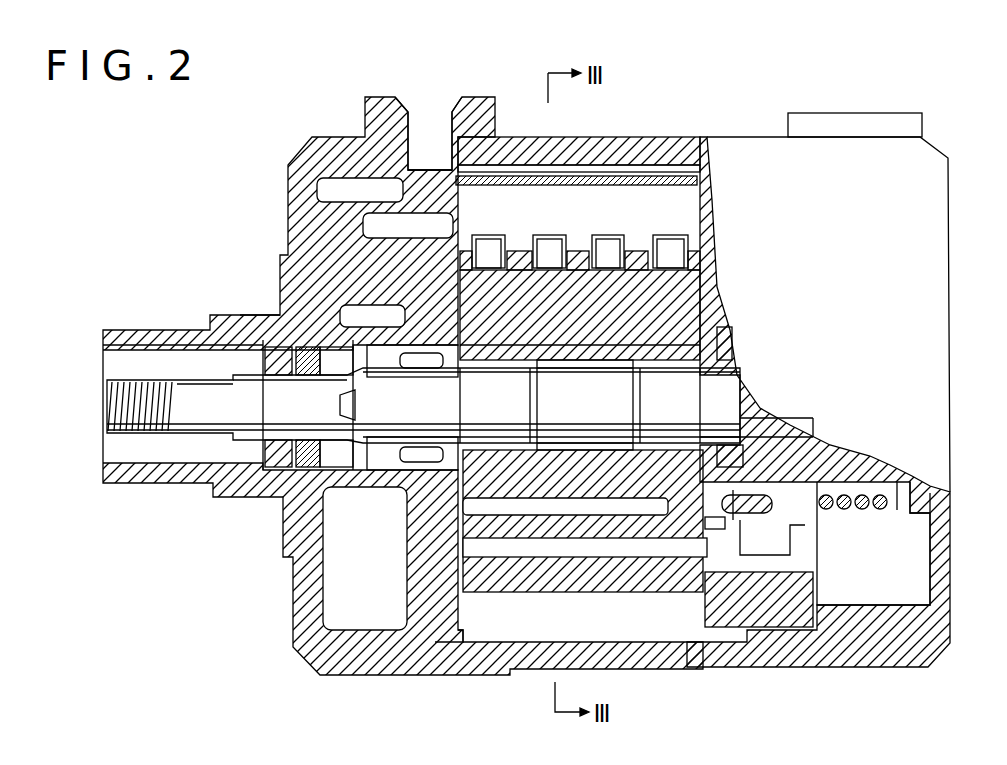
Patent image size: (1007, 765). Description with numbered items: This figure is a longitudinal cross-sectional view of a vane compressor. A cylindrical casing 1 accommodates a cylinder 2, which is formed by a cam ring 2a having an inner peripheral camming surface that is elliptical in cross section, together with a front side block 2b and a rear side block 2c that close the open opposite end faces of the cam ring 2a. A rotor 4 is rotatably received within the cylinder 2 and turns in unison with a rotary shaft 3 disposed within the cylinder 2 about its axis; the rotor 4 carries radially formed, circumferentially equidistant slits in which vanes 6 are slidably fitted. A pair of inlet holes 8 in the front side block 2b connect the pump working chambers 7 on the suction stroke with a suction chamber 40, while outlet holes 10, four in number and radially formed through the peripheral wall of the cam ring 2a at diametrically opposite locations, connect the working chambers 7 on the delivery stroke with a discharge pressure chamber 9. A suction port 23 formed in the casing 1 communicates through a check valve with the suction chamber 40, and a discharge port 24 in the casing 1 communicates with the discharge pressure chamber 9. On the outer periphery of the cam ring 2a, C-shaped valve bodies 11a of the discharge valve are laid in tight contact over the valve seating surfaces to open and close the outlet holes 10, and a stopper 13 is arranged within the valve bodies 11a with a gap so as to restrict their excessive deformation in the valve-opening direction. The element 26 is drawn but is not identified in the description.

The casing 1 is at (600, 137).
The cylinder 2 is at (510, 600).
The cam ring 2a is at (646, 594).
The front side block 2b is at (448, 630).
The rear side block 2c is at (788, 628).
The rotary shaft 3 is at (203, 427).
The rotor 4 is at (532, 492).
The vanes 6 is at (592, 362).
The pump working chambers 7 is at (585, 547).
The inlet holes 8 is at (430, 216).
The discharge pressure chamber 9 is at (655, 168).
The outlet holes 10 is at (700, 272).
The valve bodies 11a is at (473, 272).
The stopper 13 is at (497, 250).
The suction port 23 is at (862, 113).
The discharge port 24 is at (445, 120).
The chamber 26 is at (920, 550).
The suction chamber 40 is at (377, 216).